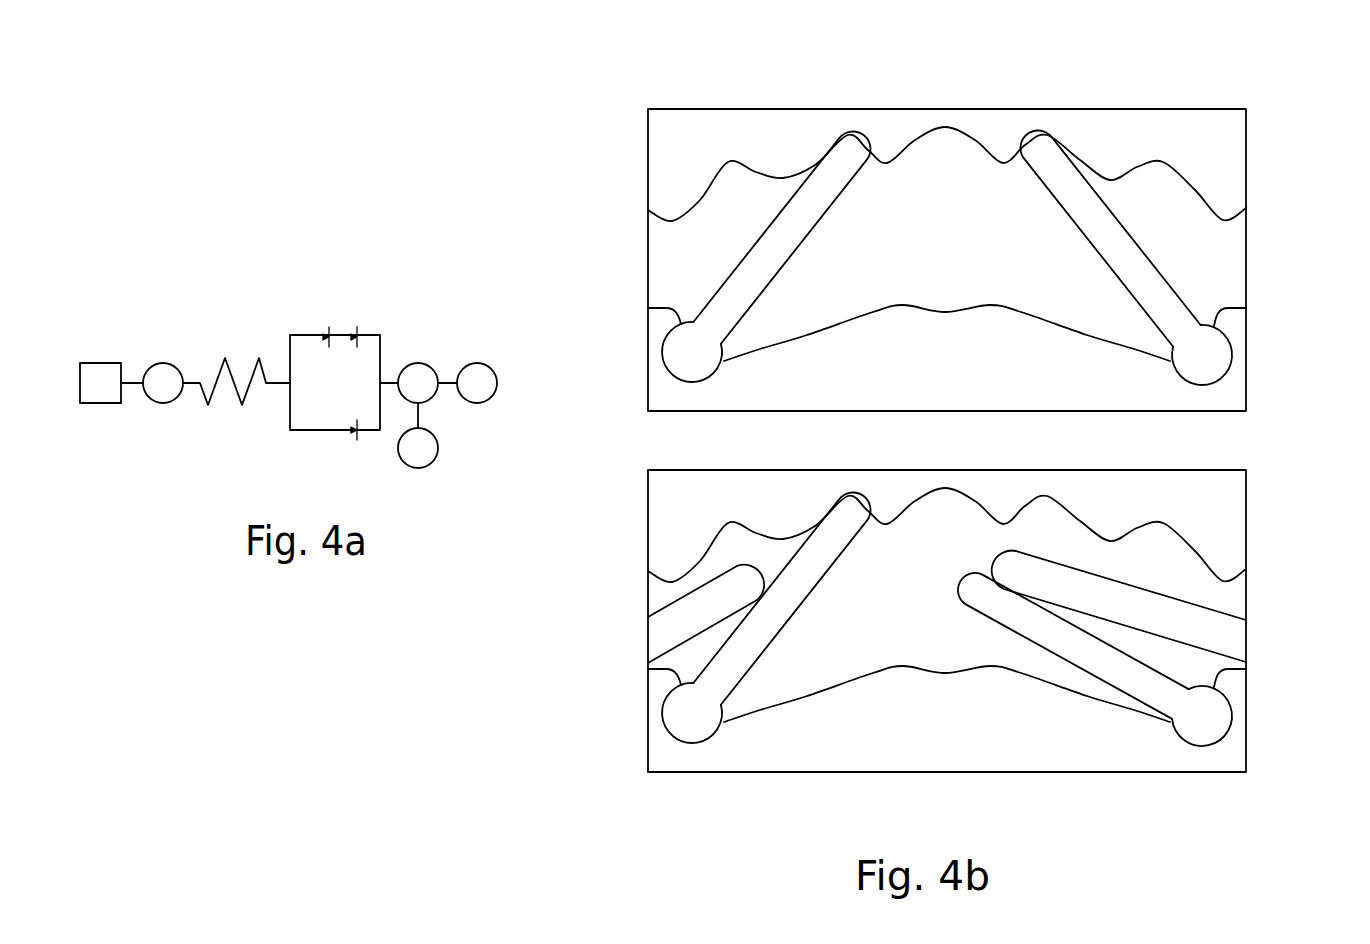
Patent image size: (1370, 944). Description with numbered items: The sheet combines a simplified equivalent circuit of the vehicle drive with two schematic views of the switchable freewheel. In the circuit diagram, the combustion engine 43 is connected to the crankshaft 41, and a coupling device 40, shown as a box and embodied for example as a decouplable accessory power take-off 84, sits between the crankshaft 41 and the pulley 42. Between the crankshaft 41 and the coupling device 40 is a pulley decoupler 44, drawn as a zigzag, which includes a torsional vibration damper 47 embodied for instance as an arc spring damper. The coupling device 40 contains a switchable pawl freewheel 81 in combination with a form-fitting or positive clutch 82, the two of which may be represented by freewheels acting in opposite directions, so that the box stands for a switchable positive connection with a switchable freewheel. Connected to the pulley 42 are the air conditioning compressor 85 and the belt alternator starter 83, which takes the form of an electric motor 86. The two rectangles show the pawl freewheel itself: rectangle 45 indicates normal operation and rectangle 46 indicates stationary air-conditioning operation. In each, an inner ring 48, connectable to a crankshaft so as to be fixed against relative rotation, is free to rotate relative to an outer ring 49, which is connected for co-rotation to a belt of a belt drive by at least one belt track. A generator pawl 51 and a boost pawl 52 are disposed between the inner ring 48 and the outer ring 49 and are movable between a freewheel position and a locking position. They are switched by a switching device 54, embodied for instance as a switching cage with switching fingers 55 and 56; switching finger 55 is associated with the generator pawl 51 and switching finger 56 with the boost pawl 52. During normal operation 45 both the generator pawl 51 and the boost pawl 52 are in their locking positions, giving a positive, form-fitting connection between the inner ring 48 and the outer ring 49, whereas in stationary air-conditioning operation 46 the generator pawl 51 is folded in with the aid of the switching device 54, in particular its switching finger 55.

In FIG. 4A, the coupling device 40 is at (330, 329).
In FIG. 4A, the crankshaft 41 is at (162, 363).
In FIG. 4A, the pulley 42 is at (417, 360).
In FIG. 4A, the combustion engine 43 is at (107, 405).
In FIG. 4A, the pulley decoupler 44 is at (229, 383).
In FIG. 4B, the rectangle indicating normal operation 45 is at (1246, 138).
In FIG. 4B, the rectangle indicating stationary air-conditioning operation 46 is at (1247, 508).
In FIG. 4A, the torsional vibration damper 47 is at (237, 400).
In FIG. 4B, the inner ring 48 is at (672, 392).
In FIG. 4B, the outer ring 49 is at (735, 130).
In FIG. 4B, the generator pawl 51 is at (1157, 295).
In FIG. 4B, the boost pawl 52 is at (735, 295).
In FIG. 4B, the switching device 54 is at (1165, 616).
In FIG. 4B, the switching finger 55 is at (1147, 607).
In FIG. 4B, the switching finger 56 is at (677, 627).
In FIG. 4A, the switchable pawl freewheel 81 is at (352, 433).
In FIG. 4A, the form-fitting clutch 82 is at (360, 327).
In FIG. 4A, the belt alternator starter 83 is at (511, 361).
In FIG. 4A, the decouplable accessory power take-off 84 is at (342, 307).
In FIG. 4A, the air conditioning compressor 85 is at (438, 448).
In FIG. 4A, the electric motor 86 is at (498, 373).